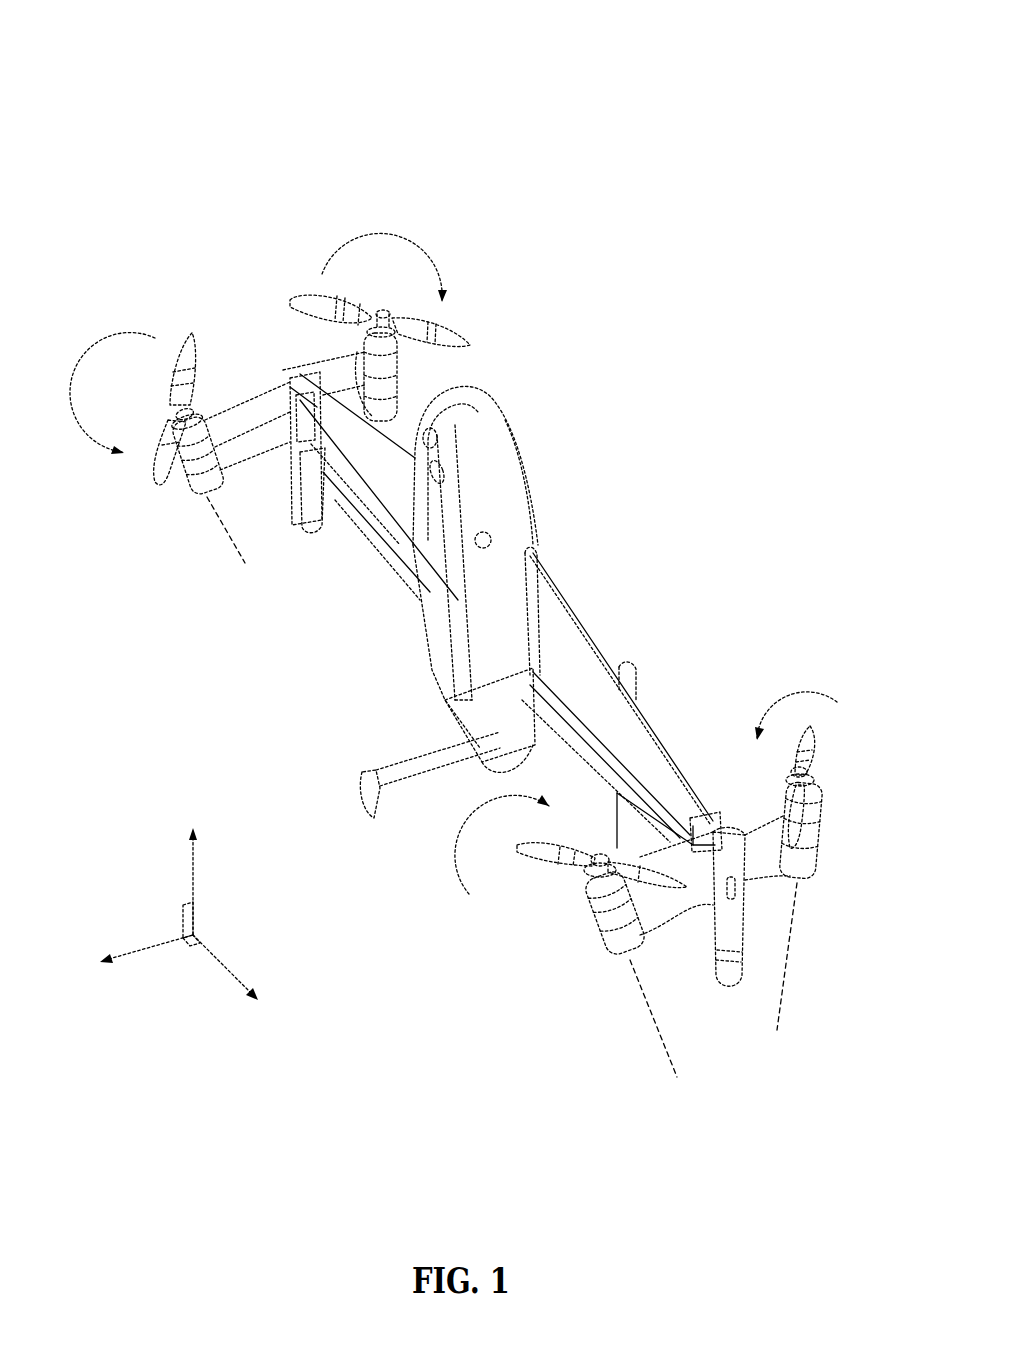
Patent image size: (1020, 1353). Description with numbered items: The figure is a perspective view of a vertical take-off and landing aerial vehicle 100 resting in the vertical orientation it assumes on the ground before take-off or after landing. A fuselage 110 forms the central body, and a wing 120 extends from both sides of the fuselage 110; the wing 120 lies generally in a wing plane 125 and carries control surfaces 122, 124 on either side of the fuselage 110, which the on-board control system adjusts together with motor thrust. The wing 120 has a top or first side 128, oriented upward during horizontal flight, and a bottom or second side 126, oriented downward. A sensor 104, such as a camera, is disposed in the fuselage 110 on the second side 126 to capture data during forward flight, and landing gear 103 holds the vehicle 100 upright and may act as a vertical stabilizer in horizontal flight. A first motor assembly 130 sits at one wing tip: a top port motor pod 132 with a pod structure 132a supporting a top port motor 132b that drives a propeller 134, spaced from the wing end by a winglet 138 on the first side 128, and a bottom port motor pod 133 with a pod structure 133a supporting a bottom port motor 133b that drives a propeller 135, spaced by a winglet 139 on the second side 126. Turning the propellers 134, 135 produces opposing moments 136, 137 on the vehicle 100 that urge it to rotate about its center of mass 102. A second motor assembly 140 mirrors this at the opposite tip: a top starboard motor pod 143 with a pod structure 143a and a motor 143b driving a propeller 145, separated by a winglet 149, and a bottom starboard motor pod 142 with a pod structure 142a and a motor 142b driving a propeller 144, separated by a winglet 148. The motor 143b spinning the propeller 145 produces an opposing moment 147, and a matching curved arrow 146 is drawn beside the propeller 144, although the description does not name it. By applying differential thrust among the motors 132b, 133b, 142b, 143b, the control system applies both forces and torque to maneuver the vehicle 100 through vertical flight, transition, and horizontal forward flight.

The aerial vehicle 100 is at (795, 67).
The center of mass 102 is at (490, 538).
The landing gear 103 is at (437, 767).
The sensor 104 is at (423, 462).
The fuselage 110 is at (500, 452).
The wing 120 is at (590, 673).
The control surface 122 is at (635, 835).
The control surface 124 is at (347, 520).
The wing plane 125 is at (390, 498).
The second side 126 is at (402, 693).
The first side 128 is at (585, 526).
The first motor assembly 130 is at (748, 1016).
The top port motor pod 132 is at (828, 898).
The top port pod structure 132a is at (818, 850).
The top port motor 132b is at (818, 793).
The bottom port motor pod 133 is at (593, 965).
The bottom port pod structure 133a is at (600, 920).
The bottom port motor 133b is at (590, 887).
The propeller 134 is at (812, 752).
The propeller 135 is at (540, 860).
The opposing moment 136 is at (797, 690).
The opposing moment 137 is at (480, 880).
The winglet 138 is at (763, 880).
The winglet 139 is at (680, 900).
The second motor assembly 140 is at (242, 303).
The bottom starboard motor pod 142 is at (164, 499).
The bottom starboard pod structure 142a is at (180, 470).
The bottom starboard motor 142b is at (165, 415).
The top starboard motor pod 143 is at (403, 365).
The top starboard pod structure 143a is at (398, 367).
The top starboard motor 143b is at (366, 333).
The propeller 144 is at (165, 465).
The propeller 145 is at (313, 306).
The front left rotation direction 146 is at (97, 350).
The opposing moment 147 is at (388, 231).
The winglet 148 is at (245, 410).
The winglet 149 is at (340, 377).